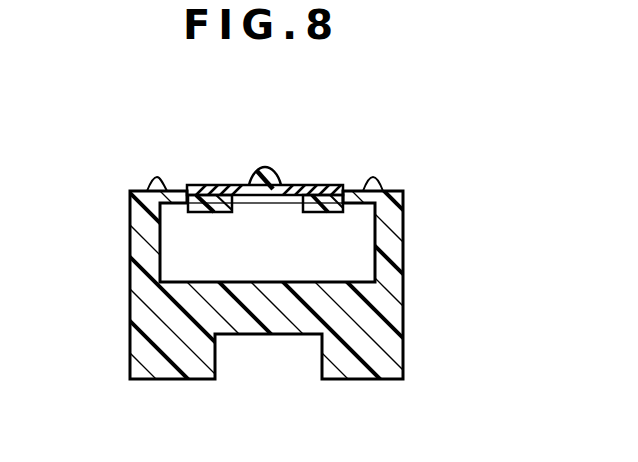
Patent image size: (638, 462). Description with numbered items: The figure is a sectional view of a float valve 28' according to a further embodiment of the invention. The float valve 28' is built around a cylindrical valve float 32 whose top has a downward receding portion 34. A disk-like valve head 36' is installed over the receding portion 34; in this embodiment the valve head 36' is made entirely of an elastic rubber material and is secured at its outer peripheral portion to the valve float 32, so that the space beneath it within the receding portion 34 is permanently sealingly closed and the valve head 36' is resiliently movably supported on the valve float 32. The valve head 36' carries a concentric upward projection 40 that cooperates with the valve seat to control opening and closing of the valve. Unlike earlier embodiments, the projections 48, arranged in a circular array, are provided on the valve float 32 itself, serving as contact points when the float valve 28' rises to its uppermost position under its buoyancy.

The float valve 28' is at (319, 285).
The valve float 32 is at (377, 313).
The receding portion 34 is at (168, 233).
The upward projection 40 is at (277, 167).
The valve head 36' is at (336, 219).
The projections 48 is at (182, 202).